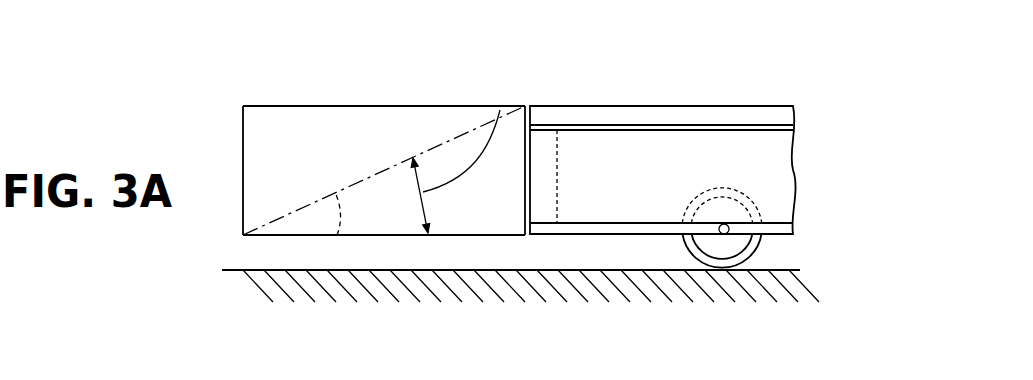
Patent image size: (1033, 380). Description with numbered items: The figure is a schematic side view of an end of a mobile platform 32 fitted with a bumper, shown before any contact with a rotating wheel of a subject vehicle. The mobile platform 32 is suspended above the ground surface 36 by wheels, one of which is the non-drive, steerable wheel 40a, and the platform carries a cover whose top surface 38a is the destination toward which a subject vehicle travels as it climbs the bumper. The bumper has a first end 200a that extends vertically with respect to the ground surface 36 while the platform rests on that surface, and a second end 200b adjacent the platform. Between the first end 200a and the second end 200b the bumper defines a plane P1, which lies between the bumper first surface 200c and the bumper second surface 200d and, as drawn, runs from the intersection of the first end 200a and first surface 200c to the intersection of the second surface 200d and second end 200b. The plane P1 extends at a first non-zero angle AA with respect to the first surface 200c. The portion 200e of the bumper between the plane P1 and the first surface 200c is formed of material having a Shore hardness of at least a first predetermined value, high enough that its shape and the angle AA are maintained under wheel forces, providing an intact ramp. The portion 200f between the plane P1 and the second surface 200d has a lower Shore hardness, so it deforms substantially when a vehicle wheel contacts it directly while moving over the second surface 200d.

The mobile platform 32 is at (743, 139).
The ground surface 36 is at (250, 272).
The top surface of the mobile platform cover 38a is at (690, 106).
The wheel 40a is at (753, 252).
The bumper first end 200a is at (242, 193).
The bumper second end 200b is at (530, 177).
The bumper first surface 200c is at (490, 236).
The bumper second surface 200d is at (303, 106).
The portion of the bumper between the plane and the first surface 200e is at (463, 210).
The portion of the bumper between the plane and the second surface 200f is at (325, 132).
The first non-zero angle AA is at (500, 110).
The plane P1 is at (337, 235).